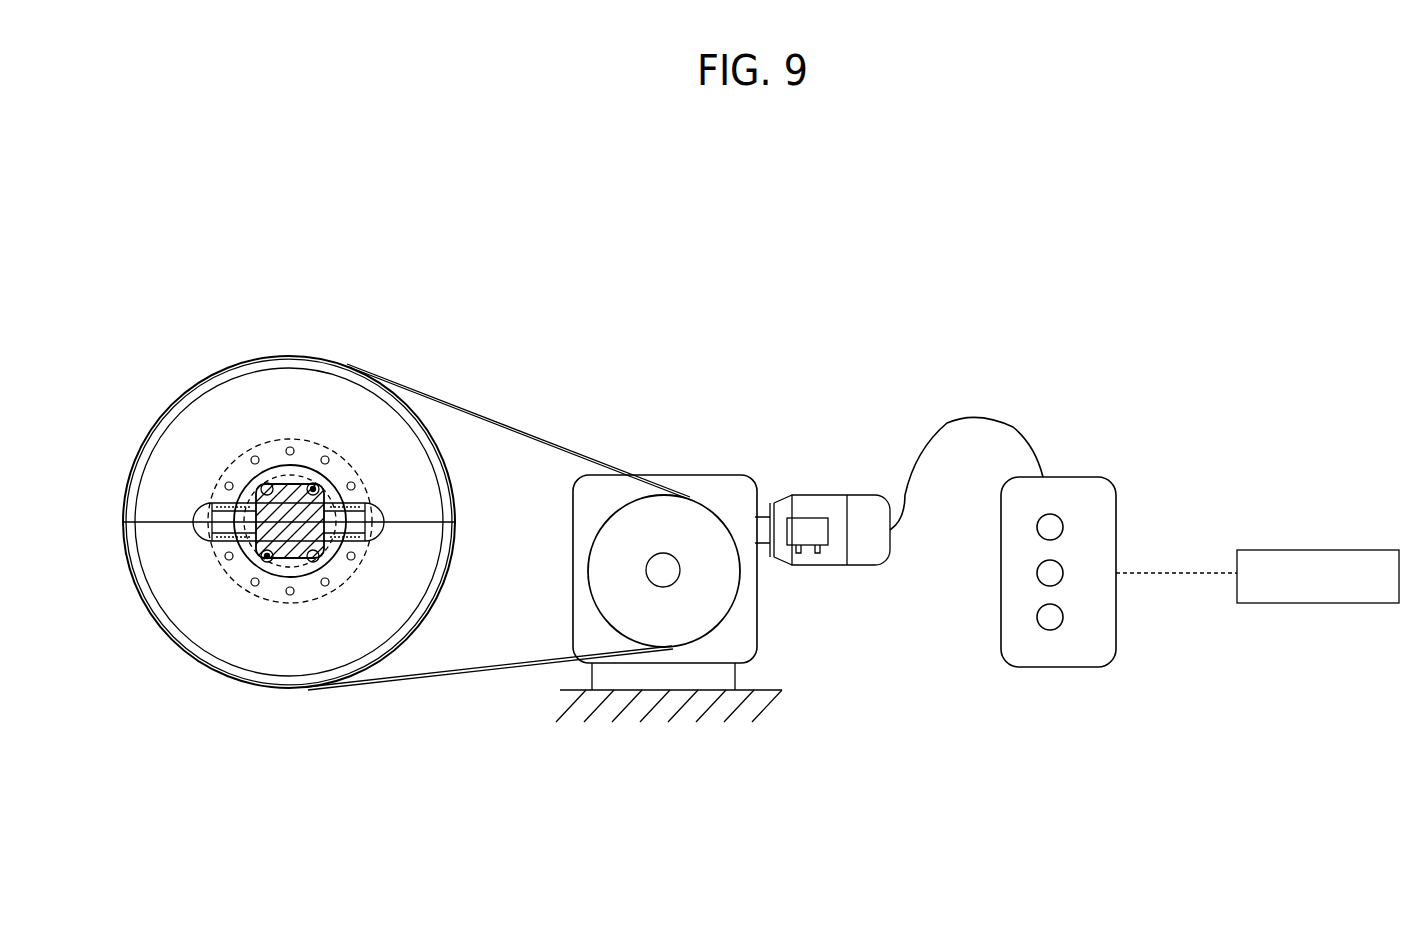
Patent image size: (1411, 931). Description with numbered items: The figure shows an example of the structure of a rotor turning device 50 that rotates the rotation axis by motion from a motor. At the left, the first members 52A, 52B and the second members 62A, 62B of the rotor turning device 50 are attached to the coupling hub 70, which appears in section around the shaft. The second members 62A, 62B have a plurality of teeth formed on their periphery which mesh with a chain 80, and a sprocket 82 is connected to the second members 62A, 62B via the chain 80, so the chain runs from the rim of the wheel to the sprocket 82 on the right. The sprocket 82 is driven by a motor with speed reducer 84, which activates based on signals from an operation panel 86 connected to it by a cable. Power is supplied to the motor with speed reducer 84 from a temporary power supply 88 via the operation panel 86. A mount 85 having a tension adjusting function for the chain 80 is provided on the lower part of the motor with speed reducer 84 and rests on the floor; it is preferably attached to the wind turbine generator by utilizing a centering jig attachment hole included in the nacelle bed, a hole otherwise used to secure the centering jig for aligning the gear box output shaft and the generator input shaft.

The rotor turning device 50 is at (987, 285).
The first member 52A is at (240, 456).
The first member 52B is at (264, 602).
The second member 62A is at (433, 415).
The second member 62B is at (425, 647).
The coupling hub 70 is at (263, 554).
The chain 80 is at (517, 425).
The sprocket 82 is at (700, 517).
The motor with speed reducer 84 is at (825, 493).
The mount 85 is at (737, 680).
The operation panel 86 is at (1075, 477).
The temporary power supply 88 is at (1264, 550).